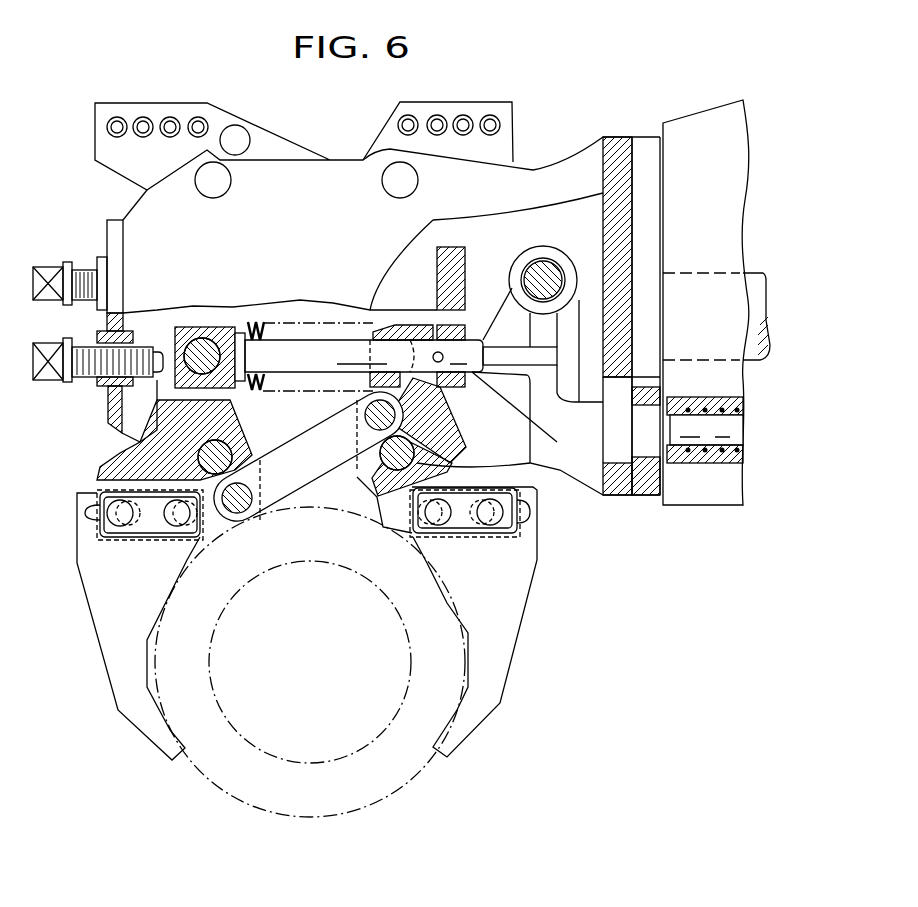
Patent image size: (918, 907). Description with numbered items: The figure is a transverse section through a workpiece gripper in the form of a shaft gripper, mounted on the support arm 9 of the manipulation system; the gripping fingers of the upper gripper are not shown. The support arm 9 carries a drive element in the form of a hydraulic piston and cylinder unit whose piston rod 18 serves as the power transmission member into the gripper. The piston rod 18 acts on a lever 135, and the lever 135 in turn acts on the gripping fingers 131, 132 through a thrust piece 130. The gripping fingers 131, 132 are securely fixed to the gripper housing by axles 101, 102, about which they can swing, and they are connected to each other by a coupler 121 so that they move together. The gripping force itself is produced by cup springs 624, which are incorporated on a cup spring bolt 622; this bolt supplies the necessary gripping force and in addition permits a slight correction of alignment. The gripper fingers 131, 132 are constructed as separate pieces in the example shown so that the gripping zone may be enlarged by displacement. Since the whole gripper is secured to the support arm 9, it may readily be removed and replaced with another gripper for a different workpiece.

The support arm 9 is at (727, 213).
The piston rod 18 is at (735, 427).
The axle 101 is at (447, 463).
The axle 102 is at (195, 460).
The coupler 121 is at (308, 450).
The thrust piece 130 is at (457, 380).
The gripping finger 131 is at (503, 608).
The gripping finger 132 is at (117, 617).
The lever 135 is at (578, 430).
The cup spring bolt 622 is at (308, 353).
The cup springs 624 is at (257, 322).